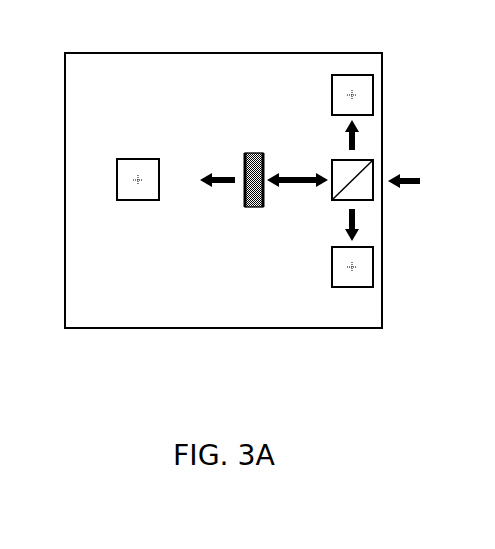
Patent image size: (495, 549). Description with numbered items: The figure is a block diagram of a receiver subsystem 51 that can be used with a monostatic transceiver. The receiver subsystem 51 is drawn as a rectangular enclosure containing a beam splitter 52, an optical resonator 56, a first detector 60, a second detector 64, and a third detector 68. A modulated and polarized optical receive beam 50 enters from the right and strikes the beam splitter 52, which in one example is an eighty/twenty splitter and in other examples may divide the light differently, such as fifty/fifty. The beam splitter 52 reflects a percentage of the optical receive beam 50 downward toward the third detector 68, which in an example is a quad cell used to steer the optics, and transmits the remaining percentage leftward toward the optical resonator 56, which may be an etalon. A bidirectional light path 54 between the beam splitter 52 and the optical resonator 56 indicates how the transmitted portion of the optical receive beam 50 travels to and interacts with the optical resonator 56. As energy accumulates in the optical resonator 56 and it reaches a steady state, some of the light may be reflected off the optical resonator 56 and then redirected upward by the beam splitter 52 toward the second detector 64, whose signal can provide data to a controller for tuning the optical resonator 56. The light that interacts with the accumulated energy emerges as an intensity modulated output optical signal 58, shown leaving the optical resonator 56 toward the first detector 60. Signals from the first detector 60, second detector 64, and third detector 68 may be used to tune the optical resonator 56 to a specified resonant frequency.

The optical receive beam 50 is at (420, 177).
The receiver subsystem 51 is at (223, 190).
The beam splitter 52 is at (373, 196).
The bidirectional light path 54 is at (298, 186).
The optical resonator 56 is at (255, 153).
The intensity modulated output optical signal 58 is at (226, 187).
The first detector 60 is at (138, 158).
The second detector 64 is at (335, 119).
The third detector 68 is at (373, 270).